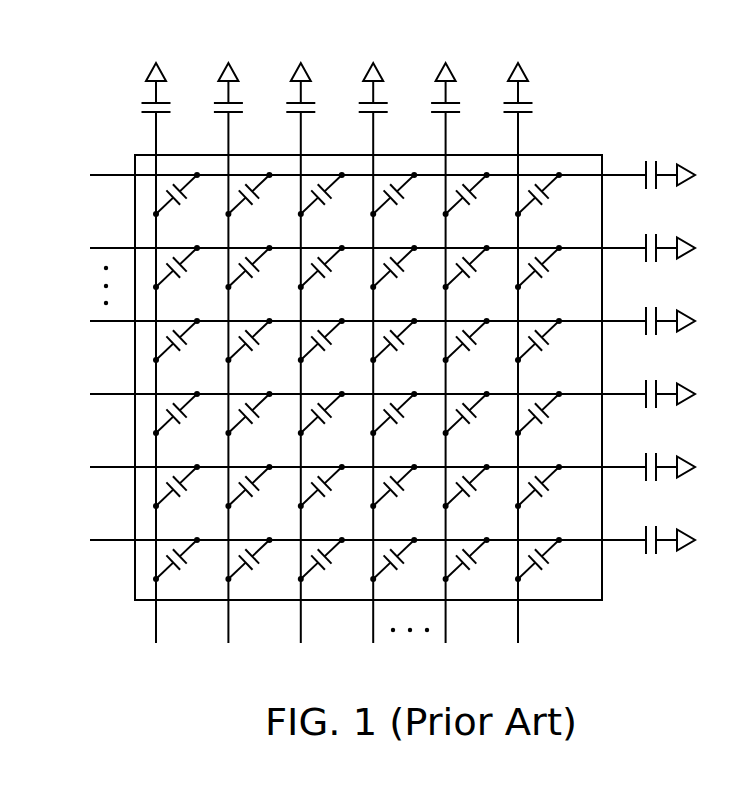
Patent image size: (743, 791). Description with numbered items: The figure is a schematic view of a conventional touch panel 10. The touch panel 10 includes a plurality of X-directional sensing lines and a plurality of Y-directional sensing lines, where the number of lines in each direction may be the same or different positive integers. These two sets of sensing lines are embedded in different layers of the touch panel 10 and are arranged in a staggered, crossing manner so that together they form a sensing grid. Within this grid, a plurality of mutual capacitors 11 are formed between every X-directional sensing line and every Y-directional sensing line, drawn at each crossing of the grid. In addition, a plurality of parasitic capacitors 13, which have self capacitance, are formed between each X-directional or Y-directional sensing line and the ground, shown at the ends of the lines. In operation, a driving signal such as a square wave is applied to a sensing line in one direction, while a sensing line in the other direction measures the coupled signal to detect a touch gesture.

The touch panel 10 is at (80, 46).
The mutual capacitor 11 is at (556, 187).
The parasitic capacitor 13 is at (383, 103).